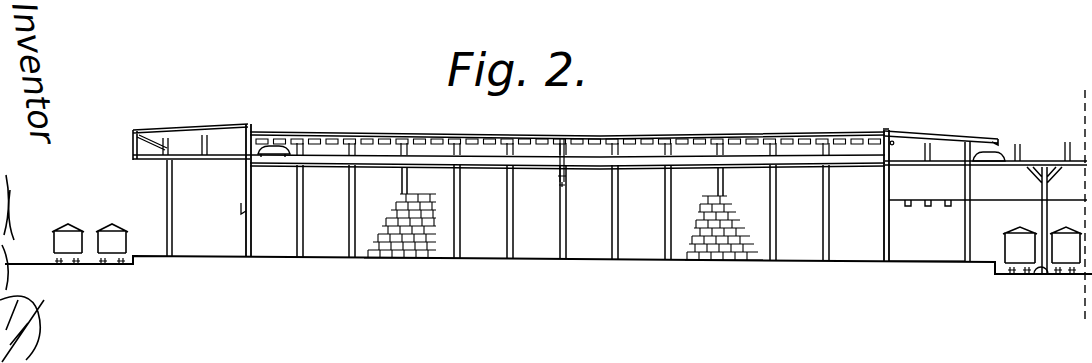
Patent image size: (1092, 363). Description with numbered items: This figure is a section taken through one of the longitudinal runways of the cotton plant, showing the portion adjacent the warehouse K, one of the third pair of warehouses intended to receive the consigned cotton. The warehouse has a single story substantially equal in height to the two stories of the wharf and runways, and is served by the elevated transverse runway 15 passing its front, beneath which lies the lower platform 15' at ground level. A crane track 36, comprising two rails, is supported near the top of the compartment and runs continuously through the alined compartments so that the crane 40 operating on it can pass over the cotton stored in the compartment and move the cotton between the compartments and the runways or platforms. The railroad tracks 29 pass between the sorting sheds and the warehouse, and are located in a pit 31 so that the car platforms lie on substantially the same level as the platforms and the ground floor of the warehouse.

The crane 40 is at (278, 147).
The warehouse K is at (611, 97).
The crane track 36 is at (746, 161).
The transverse runway 15 is at (988, 188).
The platform 15' is at (927, 243).
The railroad tracks 29 is at (1027, 276).
The pit 31 is at (1046, 277).